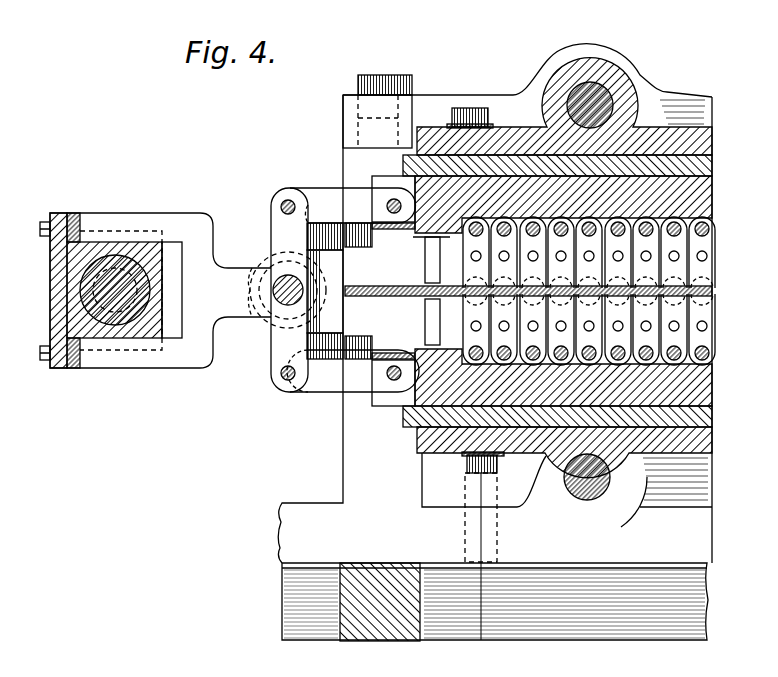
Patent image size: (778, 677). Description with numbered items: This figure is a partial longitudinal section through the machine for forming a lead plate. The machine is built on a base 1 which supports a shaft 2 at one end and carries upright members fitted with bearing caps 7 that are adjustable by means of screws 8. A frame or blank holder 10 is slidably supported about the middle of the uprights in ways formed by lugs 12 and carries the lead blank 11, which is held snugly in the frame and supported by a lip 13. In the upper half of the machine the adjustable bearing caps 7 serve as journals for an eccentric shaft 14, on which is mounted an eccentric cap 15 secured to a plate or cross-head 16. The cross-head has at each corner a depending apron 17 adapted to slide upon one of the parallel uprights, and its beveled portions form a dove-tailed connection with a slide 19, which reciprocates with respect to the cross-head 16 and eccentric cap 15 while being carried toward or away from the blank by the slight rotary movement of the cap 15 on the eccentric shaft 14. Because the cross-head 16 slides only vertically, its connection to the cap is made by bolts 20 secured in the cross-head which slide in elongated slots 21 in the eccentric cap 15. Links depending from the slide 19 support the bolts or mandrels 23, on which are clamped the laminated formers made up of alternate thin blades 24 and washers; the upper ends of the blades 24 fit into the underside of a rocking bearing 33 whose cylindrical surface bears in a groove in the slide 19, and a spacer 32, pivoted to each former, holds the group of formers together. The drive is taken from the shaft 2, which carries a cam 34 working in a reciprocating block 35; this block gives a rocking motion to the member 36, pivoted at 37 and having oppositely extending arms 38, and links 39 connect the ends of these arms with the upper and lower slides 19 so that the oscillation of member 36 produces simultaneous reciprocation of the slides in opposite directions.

The base 1 is at (296, 508).
The shaft 2 is at (122, 262).
The bearing caps 7 is at (434, 95).
The screws 8 is at (358, 86).
The frame or blank holder 10 is at (294, 298).
The lead blank 11 is at (376, 280).
The lugs 12 is at (348, 262).
The lip 13 is at (388, 304).
The eccentric shaft 14 is at (600, 62).
The eccentric cap 15 is at (642, 76).
The plate or cross-head 16 is at (403, 162).
The depending apron 17 is at (412, 284).
The slide 19 is at (375, 182).
The bolts 20 is at (470, 108).
The elongated slots 21 is at (500, 126).
The bolts or mandrels 23 is at (700, 250).
The thin blades 24 is at (563, 291).
The spacers 32 is at (432, 272).
The rocking bearing 33 is at (704, 212).
The cam 34 is at (106, 324).
The reciprocating block 35 is at (162, 322).
The member 36 is at (232, 268).
The pivot 37 is at (270, 322).
The arms 38 is at (272, 212).
The links 39 is at (318, 398).